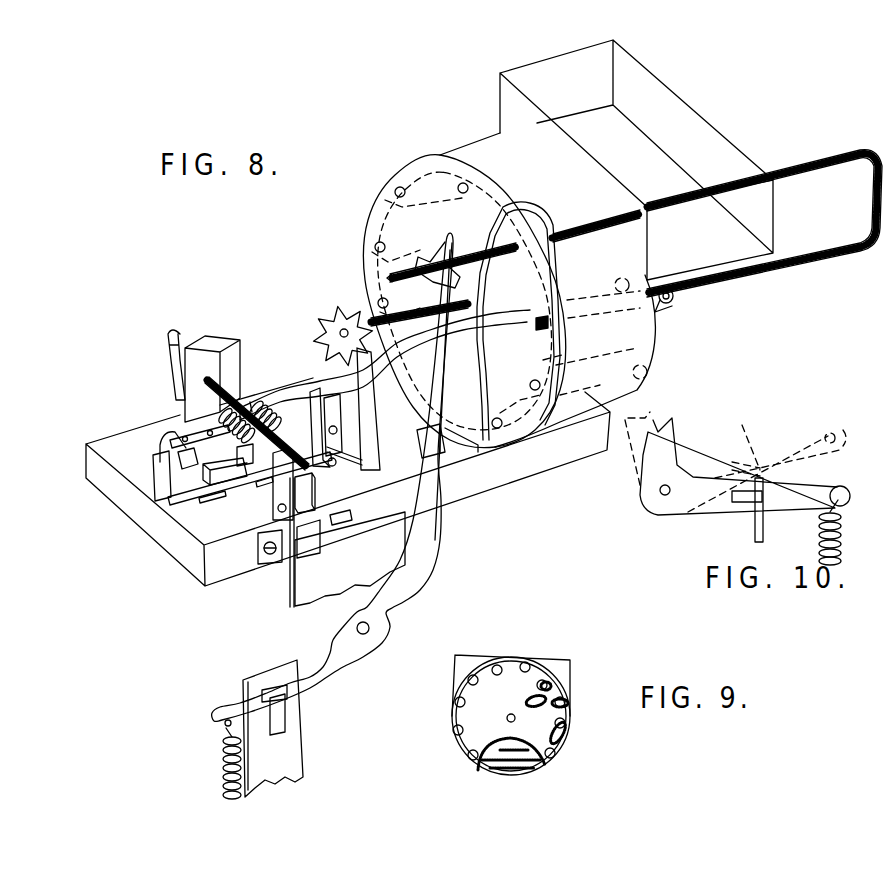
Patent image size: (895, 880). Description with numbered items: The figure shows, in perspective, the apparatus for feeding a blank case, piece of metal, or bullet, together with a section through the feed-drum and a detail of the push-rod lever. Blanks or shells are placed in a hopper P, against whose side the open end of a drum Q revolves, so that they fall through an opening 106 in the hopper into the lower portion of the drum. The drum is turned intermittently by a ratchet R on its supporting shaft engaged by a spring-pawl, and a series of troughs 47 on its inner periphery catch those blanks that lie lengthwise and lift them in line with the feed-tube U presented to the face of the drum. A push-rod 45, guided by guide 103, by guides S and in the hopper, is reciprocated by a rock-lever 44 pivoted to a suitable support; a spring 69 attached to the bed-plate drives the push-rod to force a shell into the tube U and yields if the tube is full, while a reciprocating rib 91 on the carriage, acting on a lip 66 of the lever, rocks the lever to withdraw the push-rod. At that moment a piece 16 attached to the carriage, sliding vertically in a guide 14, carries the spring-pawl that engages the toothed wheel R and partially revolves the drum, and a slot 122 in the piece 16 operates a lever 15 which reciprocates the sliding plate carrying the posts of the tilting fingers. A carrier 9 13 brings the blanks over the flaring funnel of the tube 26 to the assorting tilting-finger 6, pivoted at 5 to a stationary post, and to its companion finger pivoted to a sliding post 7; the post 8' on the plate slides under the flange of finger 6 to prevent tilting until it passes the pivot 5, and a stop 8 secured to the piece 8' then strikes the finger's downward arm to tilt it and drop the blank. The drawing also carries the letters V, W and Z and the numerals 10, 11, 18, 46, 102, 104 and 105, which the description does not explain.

In FIG. 8, the pivot 5 is at (172, 436).
In FIG. 8, the assorting tilting-finger 6 is at (293, 385).
In FIG. 8, the sliding post 7 is at (330, 421).
In FIG. 8, the stop 8 is at (188, 458).
In FIG. 8, the post piece 8' is at (162, 476).
In FIG. 8, the carrier 9 is at (180, 353).
In FIG. 8, the spring / plate 10 is at (258, 407).
In FIG. 8, the upright 11 is at (285, 485).
In FIG. 8, the carrier 13 is at (277, 410).
In FIG. 8, the guide 14 is at (352, 535).
In FIG. 8, the lever 15 is at (344, 453).
In FIG. 8, the piece 16 is at (350, 539).
In FIG. 8, the base 18 is at (348, 482).
In FIG. 8, the tube 26 is at (225, 471).
In FIG. 8, the rock-lever 44 is at (336, 479).
In FIG. 10, the rock-lever 44 is at (737, 463).
In FIG. 8, the push-rod 45 is at (687, 289).
In FIG. 8, the rod 46 is at (513, 246).
In FIG. 8, the troughs 47 is at (581, 369).
In FIG. 8, the lip 66 is at (268, 690).
In FIG. 10, the lip 66 is at (747, 495).
In FIG. 8, the spring 69 is at (226, 738).
In FIG. 10, the spring 69 is at (842, 560).
In FIG. 8, the reciprocating rib 91 is at (273, 728).
In FIG. 10, the reciprocating rib 91 is at (763, 532).
In FIG. 8, the loop 102 is at (512, 322).
In FIG. 8, the guide 103 is at (660, 306).
In FIG. 9, the pocket 104 is at (568, 702).
In FIG. 9, the article 105 is at (541, 714).
In FIG. 9, the opening 106 is at (511, 749).
In FIG. 8, the slot 122 is at (340, 520).
In FIG. 8, the hopper P is at (718, 238).
In FIG. 9, the hopper P is at (557, 670).
In FIG. 8, the drum Q is at (603, 336).
In FIG. 9, the drum Q is at (578, 758).
In FIG. 8, the ratchet R is at (343, 336).
In FIG. 8, the guides S is at (509, 295).
In FIG. 8, the feed-tube U is at (385, 365).
In FIG. 8, the rod V is at (419, 313).
In FIG. 8, the block W is at (239, 452).
In FIG. 8, the post Z is at (212, 379).